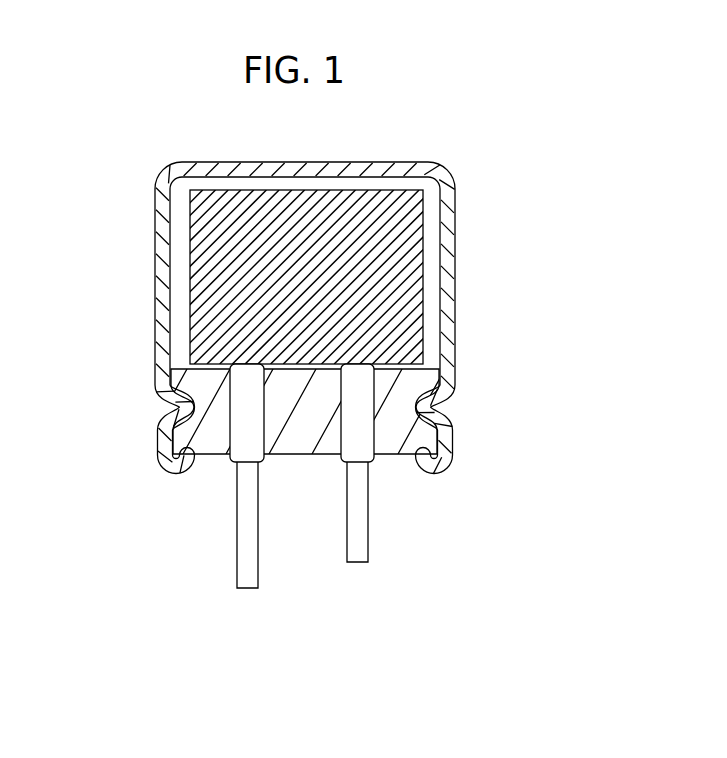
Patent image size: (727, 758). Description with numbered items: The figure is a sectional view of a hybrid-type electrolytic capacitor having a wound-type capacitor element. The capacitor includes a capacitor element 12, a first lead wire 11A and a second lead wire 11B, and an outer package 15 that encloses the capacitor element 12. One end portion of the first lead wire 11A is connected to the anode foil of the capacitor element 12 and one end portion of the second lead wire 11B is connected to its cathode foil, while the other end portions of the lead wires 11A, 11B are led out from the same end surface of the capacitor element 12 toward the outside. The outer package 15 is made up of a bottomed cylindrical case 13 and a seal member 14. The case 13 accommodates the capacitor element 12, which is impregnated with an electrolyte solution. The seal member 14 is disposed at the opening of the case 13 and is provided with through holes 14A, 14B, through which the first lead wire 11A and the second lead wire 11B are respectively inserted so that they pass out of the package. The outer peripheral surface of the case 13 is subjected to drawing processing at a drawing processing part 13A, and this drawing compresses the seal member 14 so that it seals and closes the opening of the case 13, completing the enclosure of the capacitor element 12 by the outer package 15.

The first lead wire 11A is at (245, 502).
The second lead wire 11B is at (358, 503).
The capacitor element 12 is at (207, 233).
The bottomed cylindrical case 13 is at (447, 295).
The drawing processing part 13A is at (447, 410).
The seal member 14 is at (337, 393).
The through hole 14A is at (225, 455).
The through hole 14B is at (383, 456).
The outer package 15 is at (367, 318).